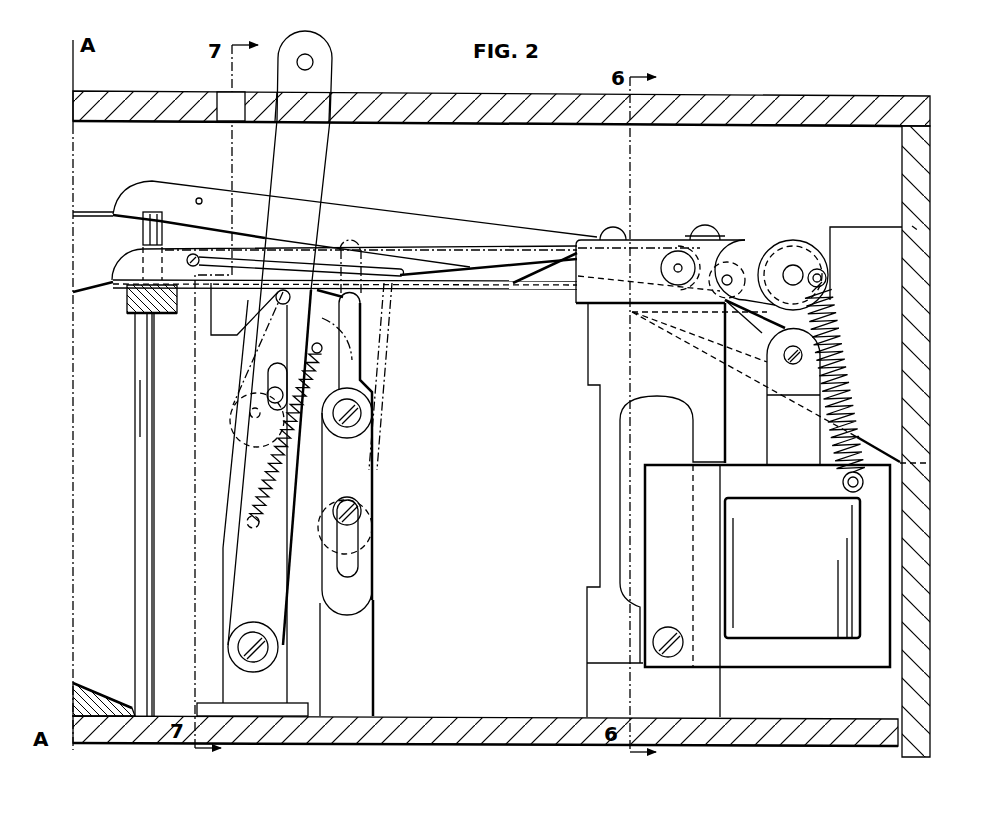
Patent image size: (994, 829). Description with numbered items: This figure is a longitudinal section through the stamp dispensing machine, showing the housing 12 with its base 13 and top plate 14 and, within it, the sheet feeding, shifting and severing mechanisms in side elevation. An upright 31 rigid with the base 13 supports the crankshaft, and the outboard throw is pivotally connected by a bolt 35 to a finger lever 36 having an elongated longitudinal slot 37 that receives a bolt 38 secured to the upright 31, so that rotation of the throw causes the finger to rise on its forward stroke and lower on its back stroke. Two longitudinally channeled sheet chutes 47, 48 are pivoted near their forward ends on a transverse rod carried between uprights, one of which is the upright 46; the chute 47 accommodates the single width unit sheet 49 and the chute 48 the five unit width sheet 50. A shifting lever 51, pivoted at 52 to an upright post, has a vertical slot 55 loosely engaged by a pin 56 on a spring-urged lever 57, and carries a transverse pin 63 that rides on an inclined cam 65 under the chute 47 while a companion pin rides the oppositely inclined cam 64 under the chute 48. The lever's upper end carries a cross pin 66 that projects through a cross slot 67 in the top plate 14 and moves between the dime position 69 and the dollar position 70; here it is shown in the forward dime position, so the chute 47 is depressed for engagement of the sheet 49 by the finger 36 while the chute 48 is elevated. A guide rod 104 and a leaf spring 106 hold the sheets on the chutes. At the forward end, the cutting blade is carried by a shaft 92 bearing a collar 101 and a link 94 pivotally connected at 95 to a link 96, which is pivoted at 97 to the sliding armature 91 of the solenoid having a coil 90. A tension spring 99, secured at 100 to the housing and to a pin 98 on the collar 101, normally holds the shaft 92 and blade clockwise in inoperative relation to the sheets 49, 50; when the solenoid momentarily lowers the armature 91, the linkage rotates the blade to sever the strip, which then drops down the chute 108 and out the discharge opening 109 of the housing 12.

The housing 12 is at (933, 543).
The base 13 is at (440, 722).
The top plate 14 is at (798, 96).
The upright 31 is at (367, 650).
The bolt 35 is at (357, 417).
The finger lever 36 is at (387, 262).
The elongated longitudinal slot 37 is at (352, 565).
The bolt 38 is at (358, 515).
The upright 46 is at (603, 506).
The sheet chute 47 is at (125, 262).
The sheet chute 48 is at (141, 185).
The single width unit sheet 49 is at (90, 286).
The five unit width sheet 50 is at (101, 210).
The shifting lever 51 is at (288, 367).
The pivot 52 is at (245, 648).
The vertical slot 55 is at (268, 370).
The pin 56 is at (267, 394).
The lever 57 is at (249, 413).
The transverse pin 63 is at (284, 304).
The inclined cam 64 is at (362, 307).
The inclined cam 65 is at (210, 330).
The cross pin 66 is at (313, 62).
The cross slot 67 is at (237, 98).
The dime position 69 is at (328, 110).
The dollar position 70 is at (214, 106).
The coil 90 is at (852, 587).
The sliding armature 91 is at (848, 404).
The shaft 92 is at (803, 277).
The link 94 is at (748, 253).
The pivot 95 is at (726, 286).
The link 96 is at (766, 332).
The pivot 97 is at (789, 359).
The pin 98 is at (826, 284).
The tension spring 99 is at (838, 346).
The spring anchor 100 is at (863, 482).
The collar 101 is at (810, 247).
The guide rod 104 is at (423, 270).
The leaf spring 106 is at (545, 267).
The chute 108 is at (741, 380).
The discharge opening 109 is at (920, 231).